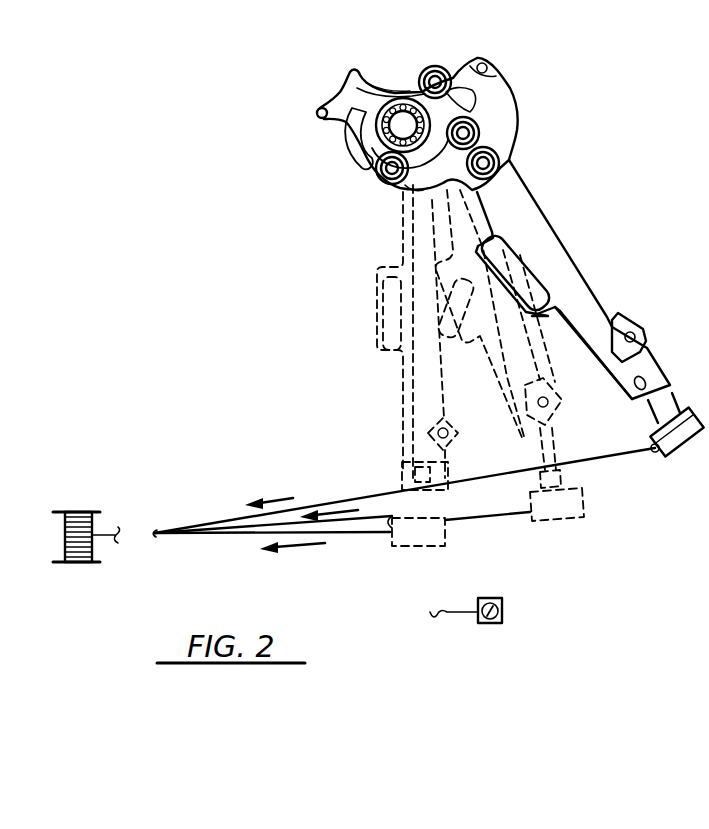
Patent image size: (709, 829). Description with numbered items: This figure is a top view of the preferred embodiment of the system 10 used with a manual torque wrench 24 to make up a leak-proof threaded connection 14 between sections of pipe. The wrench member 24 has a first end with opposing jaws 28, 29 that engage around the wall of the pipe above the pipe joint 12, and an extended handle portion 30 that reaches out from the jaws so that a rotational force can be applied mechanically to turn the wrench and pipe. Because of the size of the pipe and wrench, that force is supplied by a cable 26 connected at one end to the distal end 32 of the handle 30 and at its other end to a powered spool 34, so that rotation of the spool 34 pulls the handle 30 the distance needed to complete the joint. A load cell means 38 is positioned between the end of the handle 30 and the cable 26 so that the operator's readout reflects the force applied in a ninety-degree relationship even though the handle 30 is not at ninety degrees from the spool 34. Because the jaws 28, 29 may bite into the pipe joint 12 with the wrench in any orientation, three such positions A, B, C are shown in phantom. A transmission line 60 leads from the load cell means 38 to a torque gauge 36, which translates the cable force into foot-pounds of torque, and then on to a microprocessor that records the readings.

The system 10 is at (622, 232).
The pipe joint 12 is at (417, 78).
The threaded connection 14 is at (373, 143).
The wrench member 24 is at (528, 114).
The cable 26 is at (353, 497).
The jaw 28 is at (417, 177).
The jaw 29 is at (502, 80).
The handle portion 30 is at (607, 296).
The distal end 32 is at (648, 415).
The powered spool 34 is at (72, 512).
The torque gauge 36 is at (502, 606).
The load cell means 38 is at (681, 448).
The transmission line 60 is at (422, 546).
The wrench position A is at (552, 201).
The wrench position B is at (531, 337).
The wrench position C is at (442, 376).